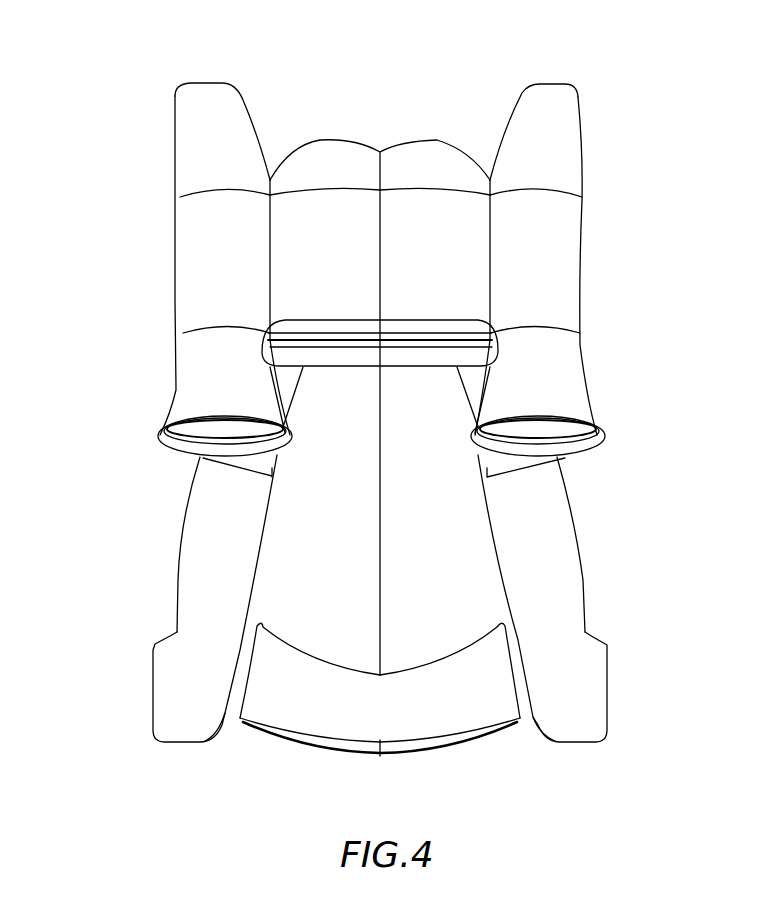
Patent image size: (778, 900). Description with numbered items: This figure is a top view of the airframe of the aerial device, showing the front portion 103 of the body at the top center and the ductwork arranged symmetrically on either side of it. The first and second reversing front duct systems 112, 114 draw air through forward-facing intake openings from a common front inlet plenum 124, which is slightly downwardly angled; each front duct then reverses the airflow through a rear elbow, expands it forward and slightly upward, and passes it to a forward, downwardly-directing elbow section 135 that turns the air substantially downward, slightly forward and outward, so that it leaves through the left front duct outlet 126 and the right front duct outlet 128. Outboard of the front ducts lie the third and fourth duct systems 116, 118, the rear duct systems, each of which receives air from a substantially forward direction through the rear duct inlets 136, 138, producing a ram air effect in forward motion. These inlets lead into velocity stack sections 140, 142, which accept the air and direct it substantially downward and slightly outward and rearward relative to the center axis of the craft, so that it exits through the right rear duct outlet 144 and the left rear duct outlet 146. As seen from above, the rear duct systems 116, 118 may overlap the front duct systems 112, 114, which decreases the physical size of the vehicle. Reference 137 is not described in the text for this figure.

The front portion 103 is at (420, 162).
The left rear duct outlet 146 is at (182, 100).
The right rear duct outlet 144 is at (578, 108).
The velocity stack section 142 is at (205, 300).
The velocity stack section 140 is at (573, 258).
The fourth duct system 118 is at (209, 266).
The third duct system 116 is at (543, 257).
The front inlet plenum 124 is at (385, 327).
The rear duct inlet 138 is at (160, 440).
The rear duct inlet 136 is at (600, 433).
The second reversing front duct system 114 is at (217, 515).
The first reversing front duct system 112 is at (535, 505).
The left lower strap edge 137 is at (212, 602).
The forward, downwardly-directing elbow section 135 is at (562, 583).
The right front duct outlet 128 is at (152, 702).
The left front duct outlet 126 is at (608, 693).